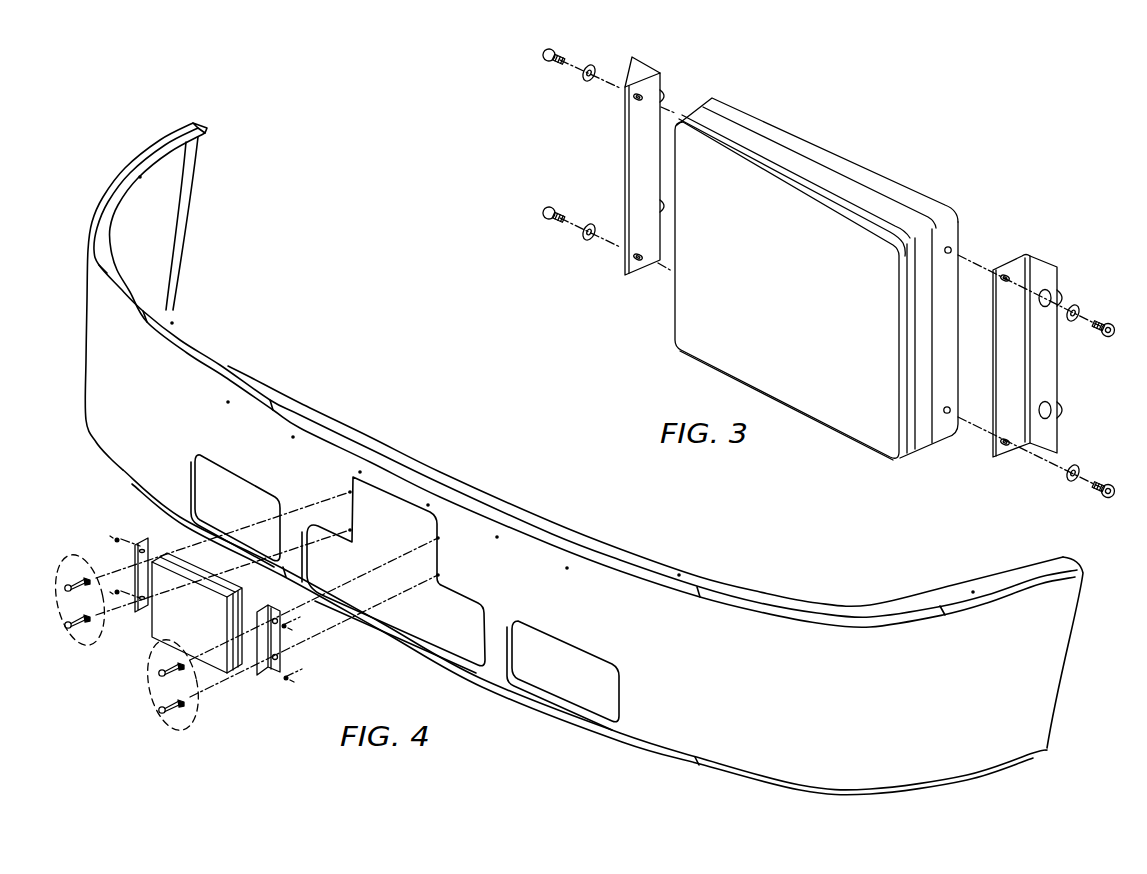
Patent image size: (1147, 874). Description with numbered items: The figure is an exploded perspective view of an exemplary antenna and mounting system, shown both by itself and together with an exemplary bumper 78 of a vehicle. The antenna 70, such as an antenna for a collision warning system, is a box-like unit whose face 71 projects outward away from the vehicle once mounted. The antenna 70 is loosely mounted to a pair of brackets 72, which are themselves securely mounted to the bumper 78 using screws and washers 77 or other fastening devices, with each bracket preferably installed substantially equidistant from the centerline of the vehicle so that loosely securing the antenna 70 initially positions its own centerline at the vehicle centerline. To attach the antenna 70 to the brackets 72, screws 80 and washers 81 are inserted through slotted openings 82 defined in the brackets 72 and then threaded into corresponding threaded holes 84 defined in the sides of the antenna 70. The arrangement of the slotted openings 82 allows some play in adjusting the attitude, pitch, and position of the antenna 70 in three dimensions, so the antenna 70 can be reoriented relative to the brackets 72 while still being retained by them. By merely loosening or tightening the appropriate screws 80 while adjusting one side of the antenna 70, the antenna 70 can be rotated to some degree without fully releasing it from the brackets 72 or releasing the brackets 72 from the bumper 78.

In FIG. 3, the antenna 70 is at (837, 289).
In FIG. 4, the antenna 70 is at (150, 637).
In FIG. 3, the face 71 is at (777, 299).
In FIG. 3, the brackets 72 is at (648, 67).
In FIG. 4, the screws and washers 77 is at (82, 556).
In FIG. 4, the bumper 78 is at (816, 716).
In FIG. 3, the screws 80 is at (547, 62).
In FIG. 3, the washers 81 is at (585, 81).
In FIG. 3, the slotted openings 82 is at (646, 98).
In FIG. 3, the threaded holes 84 is at (953, 252).